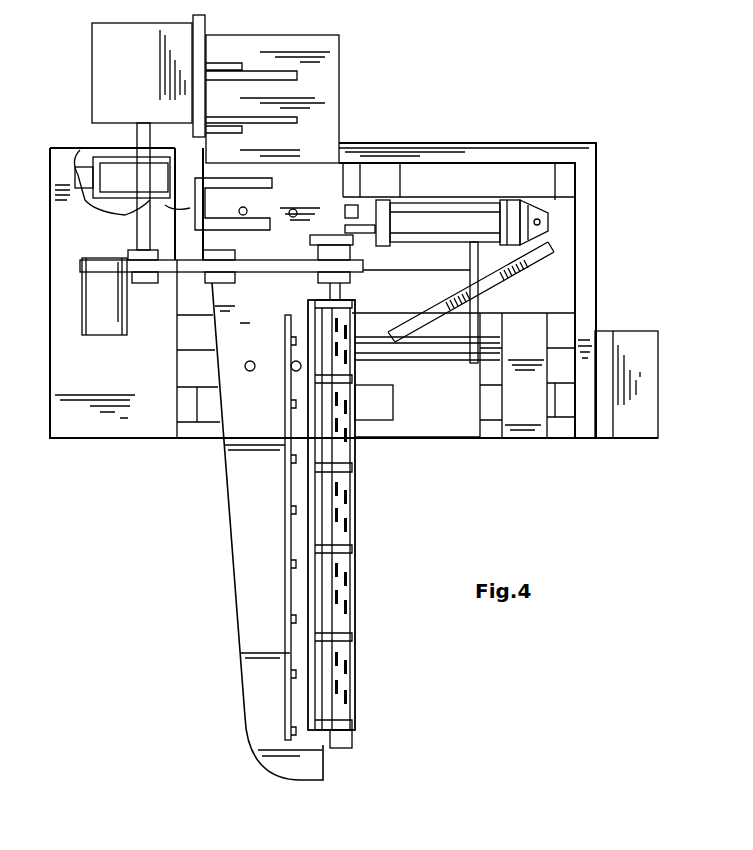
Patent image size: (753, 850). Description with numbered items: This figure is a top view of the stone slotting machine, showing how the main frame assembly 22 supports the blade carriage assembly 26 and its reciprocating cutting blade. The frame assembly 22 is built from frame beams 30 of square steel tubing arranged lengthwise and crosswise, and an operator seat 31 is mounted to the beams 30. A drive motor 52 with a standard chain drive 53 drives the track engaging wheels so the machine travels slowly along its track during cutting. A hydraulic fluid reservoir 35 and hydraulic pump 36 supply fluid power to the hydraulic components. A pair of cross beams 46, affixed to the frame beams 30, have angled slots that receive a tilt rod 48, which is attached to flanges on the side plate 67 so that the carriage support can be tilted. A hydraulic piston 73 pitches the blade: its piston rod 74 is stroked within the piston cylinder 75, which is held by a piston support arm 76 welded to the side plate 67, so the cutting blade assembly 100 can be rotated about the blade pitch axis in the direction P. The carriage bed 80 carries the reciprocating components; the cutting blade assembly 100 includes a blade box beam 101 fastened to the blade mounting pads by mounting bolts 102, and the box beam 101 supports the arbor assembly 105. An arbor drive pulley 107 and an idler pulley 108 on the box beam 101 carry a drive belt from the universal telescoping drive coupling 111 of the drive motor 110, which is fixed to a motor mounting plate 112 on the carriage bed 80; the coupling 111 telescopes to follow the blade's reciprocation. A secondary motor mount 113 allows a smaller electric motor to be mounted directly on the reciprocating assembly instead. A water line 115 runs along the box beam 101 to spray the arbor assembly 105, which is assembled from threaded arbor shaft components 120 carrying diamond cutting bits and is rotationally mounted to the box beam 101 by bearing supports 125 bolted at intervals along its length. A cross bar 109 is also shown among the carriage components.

The main frame assembly 22 is at (598, 162).
The blade carriage assembly 26 is at (343, 143).
The frame beams 30 is at (580, 276).
The operator seat 31 is at (652, 358).
The hydraulic fluid reservoir 35 is at (65, 438).
The hydraulic pump 36 is at (95, 330).
The cross beams 46 is at (490, 345).
The tilt rod 48 is at (395, 370).
The drive motor 52 is at (115, 170).
The chain drive 53 is at (122, 212).
The side plate 67 is at (438, 362).
The hydraulic piston 73 is at (460, 197).
The piston rod 74 is at (357, 208).
The piston cylinder 75 is at (483, 203).
The piston support arm 76 is at (538, 252).
The carriage bed 80 is at (325, 43).
The cutting blade assembly 100 is at (237, 632).
The blade box beam 101 is at (230, 548).
The mounting bolts 102 is at (247, 208).
The arbor assembly 105 is at (360, 727).
The arbor drive pulley 107 is at (358, 283).
The idler pulley 108 is at (222, 285).
The cross bar 109 is at (290, 262).
The drive motor 110 is at (153, 83).
The universal telescoping drive coupling 111 is at (137, 238).
The motor mounting plate 112 is at (205, 30).
The secondary motor mount 113 is at (203, 190).
The water line 115 is at (285, 596).
The arbor shaft components 120 is at (350, 690).
The bearing supports 125 is at (352, 547).